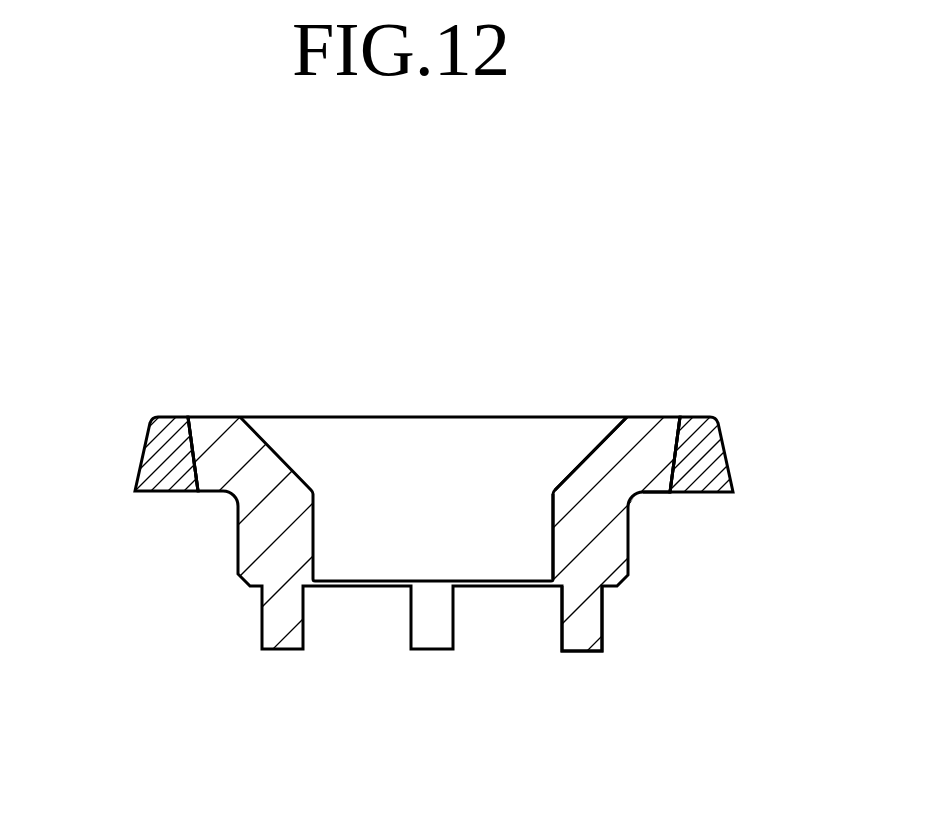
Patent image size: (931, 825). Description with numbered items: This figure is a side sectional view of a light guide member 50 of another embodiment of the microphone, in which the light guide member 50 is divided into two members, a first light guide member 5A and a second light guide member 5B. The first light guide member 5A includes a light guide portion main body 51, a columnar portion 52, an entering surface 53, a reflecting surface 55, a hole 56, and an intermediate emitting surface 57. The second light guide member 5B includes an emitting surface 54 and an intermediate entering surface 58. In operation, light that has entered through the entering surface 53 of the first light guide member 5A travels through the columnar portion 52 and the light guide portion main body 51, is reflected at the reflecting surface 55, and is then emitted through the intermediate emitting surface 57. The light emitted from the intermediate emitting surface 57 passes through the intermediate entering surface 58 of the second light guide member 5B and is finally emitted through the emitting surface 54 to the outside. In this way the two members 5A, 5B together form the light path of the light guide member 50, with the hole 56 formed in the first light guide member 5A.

The light guide member 50 is at (361, 283).
The first light guide member 5A is at (483, 329).
The second light guide member 5B is at (87, 329).
The light guide portion main body 51 is at (622, 497).
The columnar portion 52 is at (561, 630).
The entering surface 53 is at (583, 652).
The emitting surface 54 is at (142, 450).
The reflecting surface 55 is at (601, 464).
The hole 56 is at (552, 513).
The intermediate emitting surface 57 is at (668, 478).
The intermediate entering surface 58 is at (177, 445).